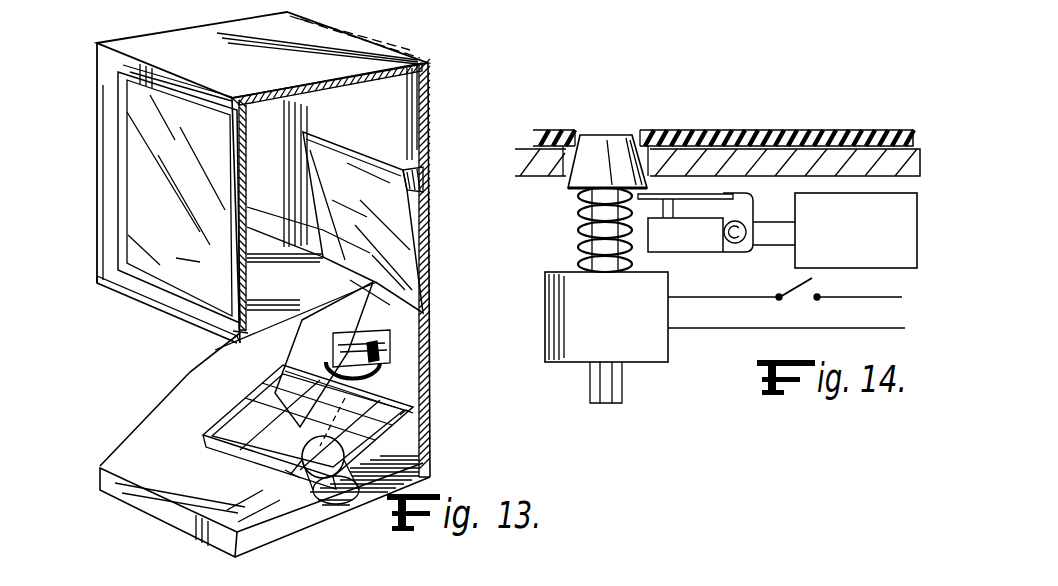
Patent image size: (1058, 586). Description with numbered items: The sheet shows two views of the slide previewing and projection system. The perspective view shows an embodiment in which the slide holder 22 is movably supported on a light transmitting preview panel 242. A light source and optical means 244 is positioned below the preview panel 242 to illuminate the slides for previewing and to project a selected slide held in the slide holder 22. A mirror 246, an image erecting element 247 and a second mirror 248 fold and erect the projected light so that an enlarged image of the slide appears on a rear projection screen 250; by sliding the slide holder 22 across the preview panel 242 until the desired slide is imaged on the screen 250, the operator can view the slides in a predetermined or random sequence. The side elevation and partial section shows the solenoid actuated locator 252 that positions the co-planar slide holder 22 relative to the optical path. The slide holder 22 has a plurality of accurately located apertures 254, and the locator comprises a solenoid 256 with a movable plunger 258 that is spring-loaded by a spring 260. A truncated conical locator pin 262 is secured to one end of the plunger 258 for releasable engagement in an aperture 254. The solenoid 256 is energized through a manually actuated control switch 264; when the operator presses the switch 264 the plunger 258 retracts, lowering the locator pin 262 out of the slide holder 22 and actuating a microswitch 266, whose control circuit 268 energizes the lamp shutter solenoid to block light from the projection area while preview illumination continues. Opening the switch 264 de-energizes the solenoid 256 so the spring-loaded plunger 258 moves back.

In FIG. 13, the slide holder 22 is at (198, 433).
In FIG. 14, the slide holder 22 is at (750, 130).
In FIG. 13, the preview panel 242 is at (183, 390).
In FIG. 13, the light source and optical means 244 is at (377, 458).
In FIG. 13, the mirror 246 is at (383, 372).
In FIG. 13, the image erecting element 247 is at (362, 345).
In FIG. 13, the mirror 248 is at (403, 205).
In FIG. 13, the rear projection screen 250 is at (128, 155).
In FIG. 14, the solenoid actuated locator 252 is at (630, 369).
In FIG. 14, the aperture 254 is at (627, 137).
In FIG. 14, the solenoid 256 is at (626, 322).
In FIG. 14, the plunger 258 is at (600, 388).
In FIG. 14, the spring 260 is at (582, 202).
In FIG. 14, the locator pin 262 is at (593, 157).
In FIG. 14, the control switch 264 is at (797, 300).
In FIG. 14, the microswitch 266 is at (668, 238).
In FIG. 14, the control circuit 268 is at (837, 260).